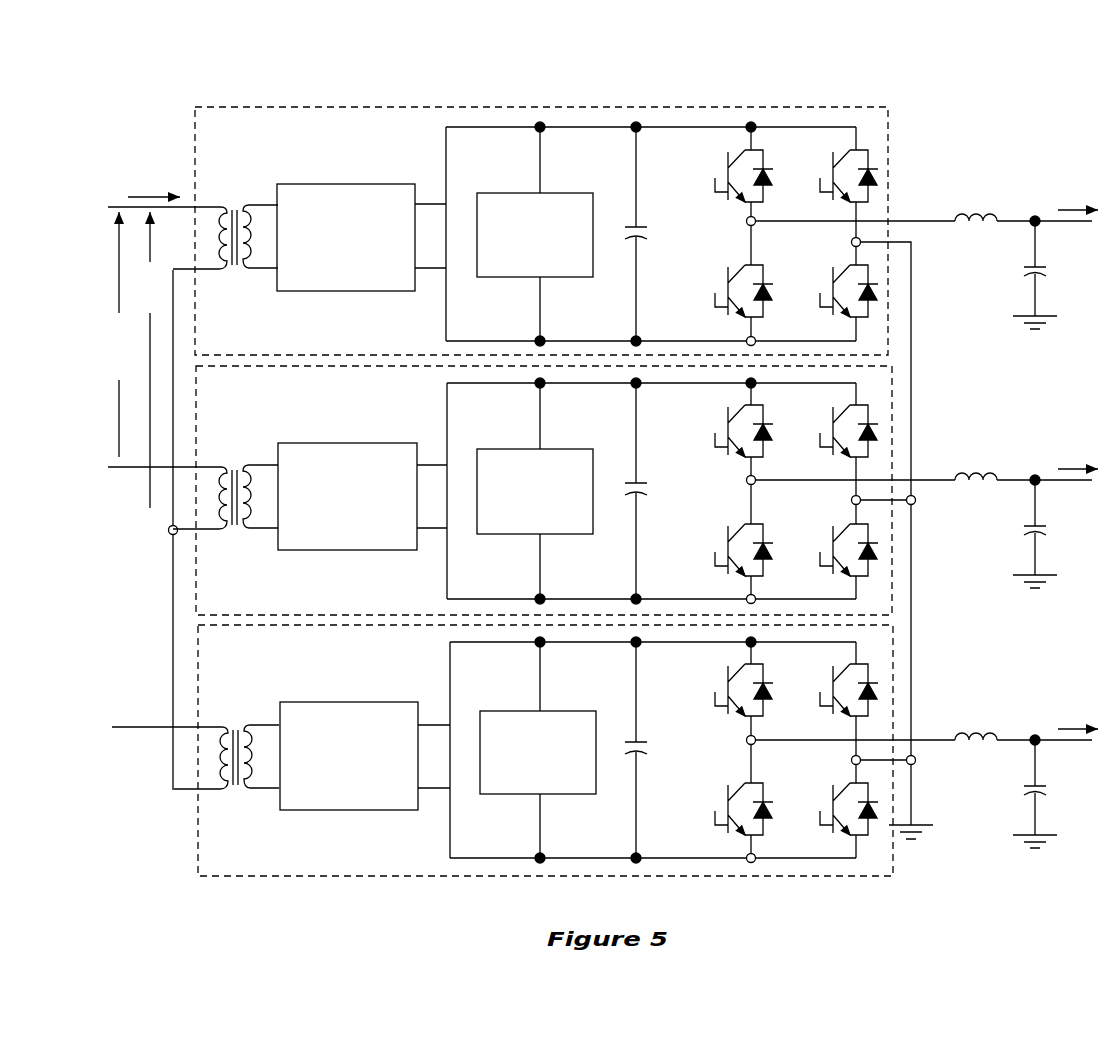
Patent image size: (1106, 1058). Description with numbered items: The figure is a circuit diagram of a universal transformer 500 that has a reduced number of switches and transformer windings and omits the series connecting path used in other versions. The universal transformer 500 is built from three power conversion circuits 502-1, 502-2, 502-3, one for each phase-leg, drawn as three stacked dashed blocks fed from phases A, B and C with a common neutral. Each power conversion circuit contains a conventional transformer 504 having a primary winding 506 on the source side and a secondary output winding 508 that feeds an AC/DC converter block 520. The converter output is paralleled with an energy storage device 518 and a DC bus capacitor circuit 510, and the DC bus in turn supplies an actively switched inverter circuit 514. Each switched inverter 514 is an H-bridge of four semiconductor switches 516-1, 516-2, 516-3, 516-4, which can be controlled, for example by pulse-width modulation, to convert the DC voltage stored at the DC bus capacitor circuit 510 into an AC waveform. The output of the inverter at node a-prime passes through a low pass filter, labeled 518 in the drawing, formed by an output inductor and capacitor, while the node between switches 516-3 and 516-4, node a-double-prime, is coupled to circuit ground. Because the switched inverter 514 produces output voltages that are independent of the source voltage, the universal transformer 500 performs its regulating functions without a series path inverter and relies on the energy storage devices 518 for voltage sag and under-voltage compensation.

The universal transformer 500 is at (594, 454).
The power conversion circuit 502-1 is at (888, 105).
The power conversion circuit 502-2 is at (893, 366).
The power conversion circuit 502-3 is at (893, 626).
The conventional transformer 504 is at (241, 208).
The primary winding 506 is at (212, 272).
The secondary output winding 508 is at (257, 203).
The DC bus capacitor circuit 510 is at (640, 190).
The actively switched inverter circuit 514 is at (765, 202).
The semiconductor switch 516-1 is at (712, 179).
The semiconductor switch 516-2 is at (716, 291).
The semiconductor switch 516-3 is at (828, 186).
The semiconductor switch 516-4 is at (832, 300).
The energy storage device 518 is at (1063, 122).
The AC/DC converter block 520 is at (346, 237).